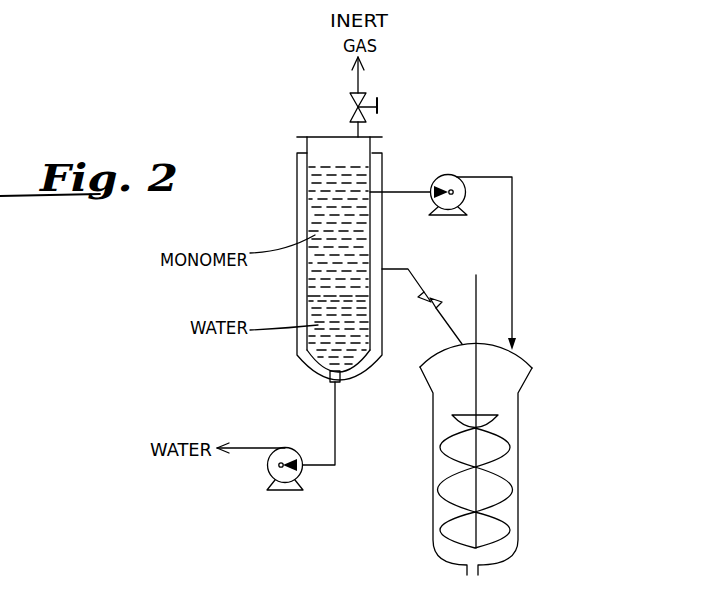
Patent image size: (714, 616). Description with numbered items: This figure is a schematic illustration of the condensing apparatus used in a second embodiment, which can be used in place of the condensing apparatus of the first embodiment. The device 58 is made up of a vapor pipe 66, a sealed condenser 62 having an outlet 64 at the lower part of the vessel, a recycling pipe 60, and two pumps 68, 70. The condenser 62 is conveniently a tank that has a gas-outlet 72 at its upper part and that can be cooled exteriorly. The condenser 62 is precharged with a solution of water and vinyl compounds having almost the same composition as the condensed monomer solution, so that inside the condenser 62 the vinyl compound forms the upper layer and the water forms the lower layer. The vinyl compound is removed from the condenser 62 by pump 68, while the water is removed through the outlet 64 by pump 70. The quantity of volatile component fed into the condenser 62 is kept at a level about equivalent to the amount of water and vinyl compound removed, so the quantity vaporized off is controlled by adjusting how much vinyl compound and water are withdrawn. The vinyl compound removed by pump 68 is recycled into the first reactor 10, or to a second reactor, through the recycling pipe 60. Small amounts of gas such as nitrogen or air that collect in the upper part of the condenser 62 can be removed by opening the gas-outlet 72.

The first reactor 10 is at (510, 383).
The device 58 is at (396, 149).
The recycling pipe 60 is at (512, 245).
The sealed condenser 62 is at (297, 202).
The outlet 64 is at (331, 381).
The vapor pipe 66 is at (418, 280).
The pump 68 is at (455, 180).
The pump 70 is at (270, 466).
The gas-outlet 72 is at (381, 102).